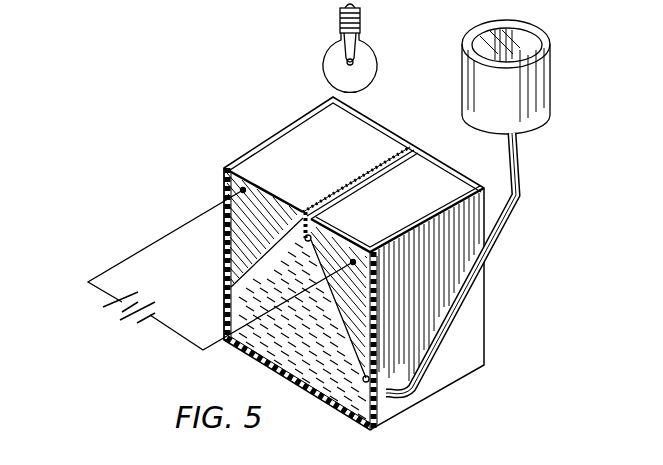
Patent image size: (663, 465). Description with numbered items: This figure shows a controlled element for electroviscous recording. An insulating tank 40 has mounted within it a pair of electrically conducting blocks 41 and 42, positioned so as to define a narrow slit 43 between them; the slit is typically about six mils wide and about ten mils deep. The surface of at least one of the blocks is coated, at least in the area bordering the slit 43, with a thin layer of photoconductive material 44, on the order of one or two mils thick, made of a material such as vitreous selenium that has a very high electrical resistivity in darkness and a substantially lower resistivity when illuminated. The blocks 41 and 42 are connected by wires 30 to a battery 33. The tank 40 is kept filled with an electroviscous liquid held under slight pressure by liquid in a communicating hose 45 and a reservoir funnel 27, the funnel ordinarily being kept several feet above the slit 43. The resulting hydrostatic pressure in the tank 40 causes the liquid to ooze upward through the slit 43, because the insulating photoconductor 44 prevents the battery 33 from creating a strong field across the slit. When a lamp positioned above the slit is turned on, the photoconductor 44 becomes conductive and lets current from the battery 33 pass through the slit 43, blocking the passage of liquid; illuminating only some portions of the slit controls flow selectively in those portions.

The reservoir funnel 27 is at (552, 80).
The wires 30 is at (125, 262).
The battery 33 is at (118, 309).
The insulating tank 40 is at (462, 376).
The electrically conducting block 41 is at (259, 156).
The electrically conducting block 42 is at (440, 178).
The slit 43 is at (366, 170).
The photoconductive material 44 is at (416, 150).
The communicating hose 45 is at (502, 236).